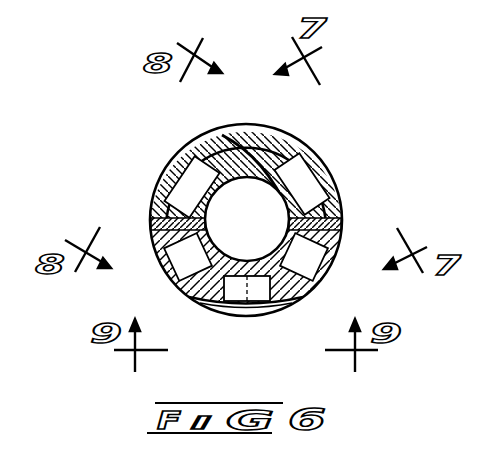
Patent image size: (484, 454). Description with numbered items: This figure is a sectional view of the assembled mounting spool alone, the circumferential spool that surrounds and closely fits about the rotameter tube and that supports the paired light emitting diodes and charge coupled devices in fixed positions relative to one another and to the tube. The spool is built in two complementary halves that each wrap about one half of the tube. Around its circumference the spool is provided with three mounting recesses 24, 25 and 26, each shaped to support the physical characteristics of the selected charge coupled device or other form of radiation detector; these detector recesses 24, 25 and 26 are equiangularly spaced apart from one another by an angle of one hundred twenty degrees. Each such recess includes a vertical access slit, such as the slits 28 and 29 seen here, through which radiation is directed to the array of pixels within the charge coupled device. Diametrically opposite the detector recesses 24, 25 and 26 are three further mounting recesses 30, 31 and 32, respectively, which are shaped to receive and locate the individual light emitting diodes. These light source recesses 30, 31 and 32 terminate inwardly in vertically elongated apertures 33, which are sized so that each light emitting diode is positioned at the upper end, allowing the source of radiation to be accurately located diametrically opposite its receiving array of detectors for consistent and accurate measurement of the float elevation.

The mounting recess 24 is at (307, 183).
The mounting recess 25 is at (187, 180).
The mounting recess 26 is at (235, 310).
The vertical access slit 28 is at (232, 205).
The vertical access slit 29 is at (250, 316).
The mounting recess 30 is at (185, 255).
The mounting recess 31 is at (323, 266).
The mounting recess 32 is at (262, 122).
The vertically elongated aperture 33 is at (283, 243).